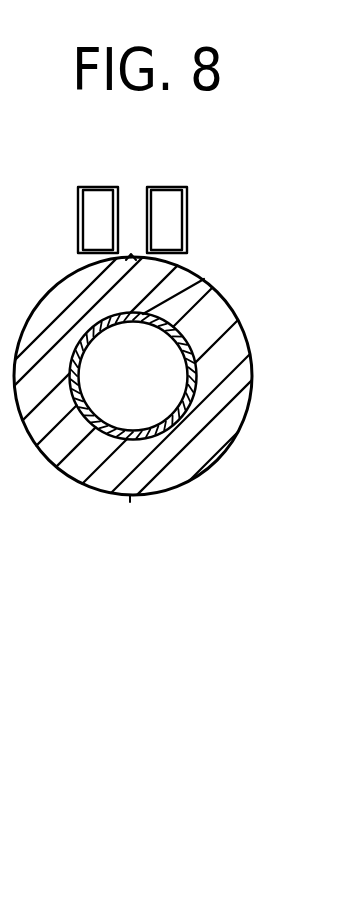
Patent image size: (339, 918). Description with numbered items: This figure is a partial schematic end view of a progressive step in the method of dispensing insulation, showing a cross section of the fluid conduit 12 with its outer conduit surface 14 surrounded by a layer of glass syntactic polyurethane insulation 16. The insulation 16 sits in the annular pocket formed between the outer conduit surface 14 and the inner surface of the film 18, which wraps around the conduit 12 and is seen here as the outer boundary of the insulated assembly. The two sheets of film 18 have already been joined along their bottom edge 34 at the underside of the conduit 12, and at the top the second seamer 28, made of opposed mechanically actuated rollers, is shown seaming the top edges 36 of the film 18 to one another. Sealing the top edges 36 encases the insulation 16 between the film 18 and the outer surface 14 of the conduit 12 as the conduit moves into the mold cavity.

The fluid conduit 12 is at (209, 455).
The outer conduit surface 14 is at (188, 322).
The insulation layer 16 is at (150, 398).
The film 18 is at (238, 314).
The second seamer 28 is at (187, 208).
The bottom edge 34 is at (130, 495).
The top edge 36 is at (131, 256).